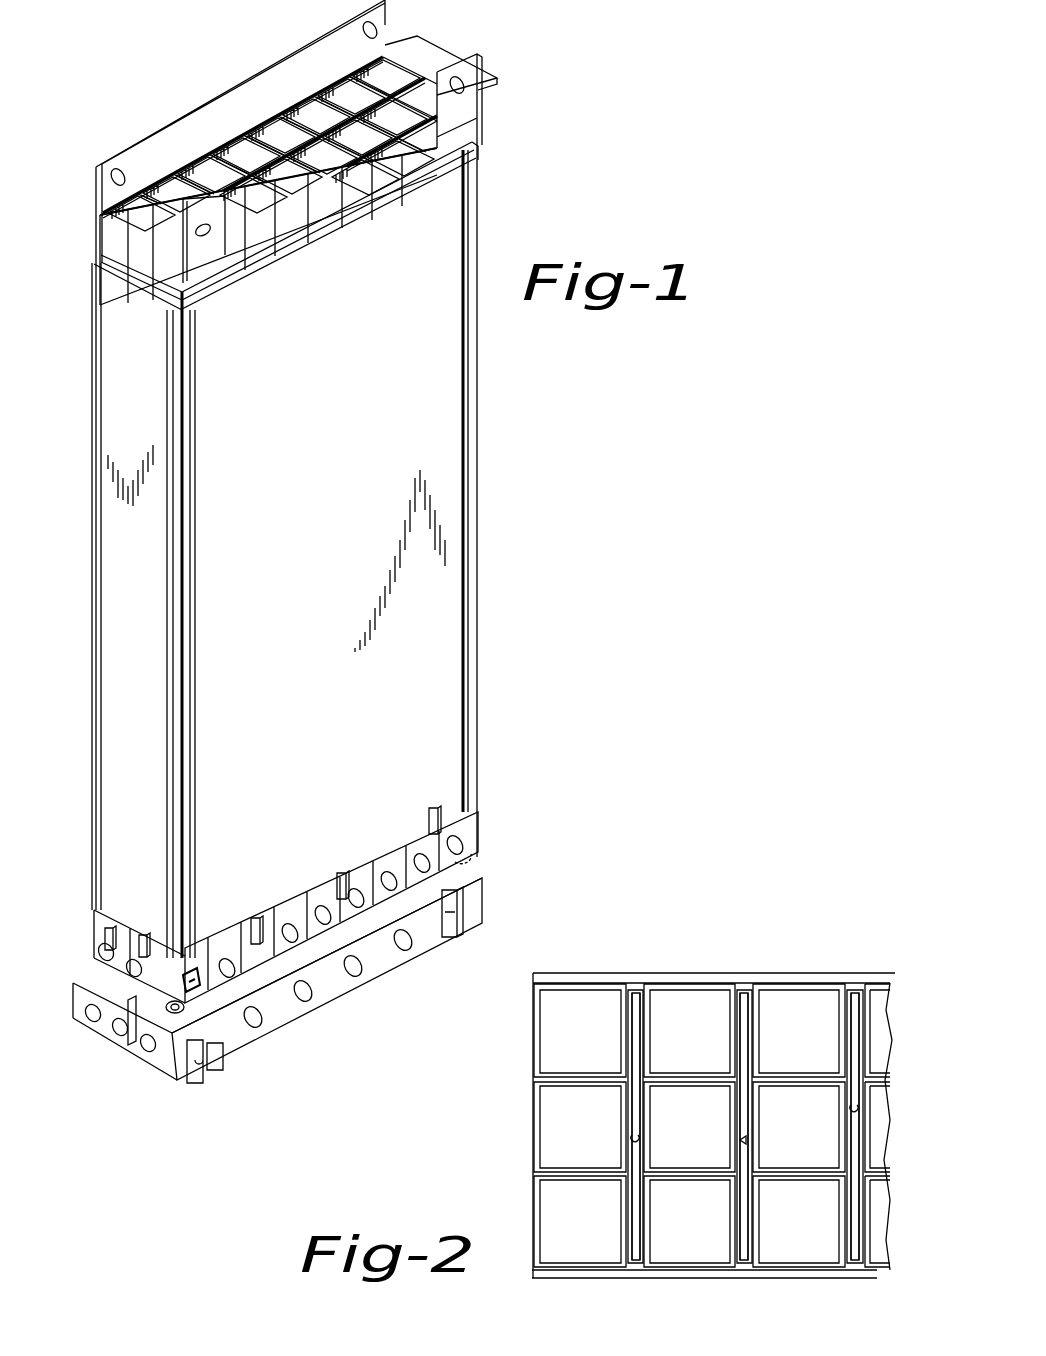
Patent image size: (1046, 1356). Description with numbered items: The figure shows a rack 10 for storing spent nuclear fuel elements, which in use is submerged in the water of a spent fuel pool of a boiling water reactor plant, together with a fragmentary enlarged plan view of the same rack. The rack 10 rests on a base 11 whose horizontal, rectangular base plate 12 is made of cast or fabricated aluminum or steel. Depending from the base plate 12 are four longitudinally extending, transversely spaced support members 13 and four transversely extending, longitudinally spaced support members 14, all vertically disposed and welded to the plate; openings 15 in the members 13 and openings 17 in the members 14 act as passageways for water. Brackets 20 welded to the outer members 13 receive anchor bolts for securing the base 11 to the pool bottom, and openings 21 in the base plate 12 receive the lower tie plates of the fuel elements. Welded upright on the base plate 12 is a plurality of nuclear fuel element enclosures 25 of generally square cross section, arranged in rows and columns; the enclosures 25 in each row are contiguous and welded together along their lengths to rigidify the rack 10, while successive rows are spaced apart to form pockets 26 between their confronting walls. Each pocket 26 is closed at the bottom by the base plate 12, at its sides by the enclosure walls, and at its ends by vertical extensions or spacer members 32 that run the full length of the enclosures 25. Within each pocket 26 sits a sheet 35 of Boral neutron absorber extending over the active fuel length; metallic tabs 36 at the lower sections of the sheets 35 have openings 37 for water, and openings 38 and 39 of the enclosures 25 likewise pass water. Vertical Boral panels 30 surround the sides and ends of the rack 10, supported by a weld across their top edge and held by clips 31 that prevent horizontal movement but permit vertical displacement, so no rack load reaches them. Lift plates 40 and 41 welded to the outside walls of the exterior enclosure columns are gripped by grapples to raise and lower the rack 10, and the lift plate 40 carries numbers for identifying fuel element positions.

In FIG. 1, the rack 10 is at (533, 381).
In FIG. 1, the base 11 is at (380, 971).
In FIG. 1, the base plate 12 is at (322, 988).
In FIG. 1, the longitudinally extending support members 13 is at (340, 960).
In FIG. 1, the transversely extending support members 14 is at (73, 1020).
In FIG. 1, the openings 15 is at (410, 942).
In FIG. 1, the openings 17 is at (100, 1038).
In FIG. 1, the brackets 20 is at (210, 1068).
In FIG. 1, the openings 21 is at (90, 966).
In FIG. 1, the nuclear fuel element enclosures 25 is at (130, 259).
In FIG. 2, the nuclear fuel element enclosures 25 is at (533, 1082).
In FIG. 1, the pockets 26 is at (377, 32).
In FIG. 2, the pockets 26 is at (633, 1138).
In FIG. 1, the panels 30 is at (115, 594).
In FIG. 1, the clips 31 is at (143, 935).
In FIG. 1, the extensions or spacer members 32 is at (140, 183).
In FIG. 2, the extensions or spacer members 32 is at (637, 990).
In FIG. 1, the sheet of Boral 35 is at (200, 150).
In FIG. 2, the sheet of Boral 35 is at (636, 1043).
In FIG. 1, the metallic tabs 36 is at (180, 1015).
In FIG. 1, the openings 37 is at (215, 1043).
In FIG. 1, the openings 38 is at (98, 950).
In FIG. 1, the openings 39 is at (318, 898).
In FIG. 1, the lift plate 40 is at (96, 186).
In FIG. 2, the lift plate 40 is at (790, 972).
In FIG. 1, the lift plate 41 is at (462, 110).
In FIG. 2, the lift plate 41 is at (530, 1278).